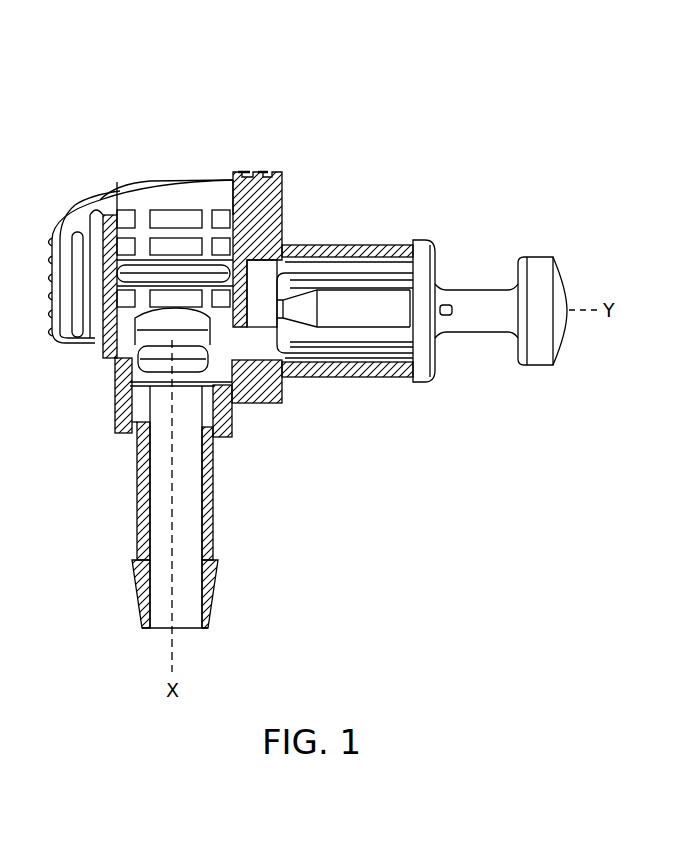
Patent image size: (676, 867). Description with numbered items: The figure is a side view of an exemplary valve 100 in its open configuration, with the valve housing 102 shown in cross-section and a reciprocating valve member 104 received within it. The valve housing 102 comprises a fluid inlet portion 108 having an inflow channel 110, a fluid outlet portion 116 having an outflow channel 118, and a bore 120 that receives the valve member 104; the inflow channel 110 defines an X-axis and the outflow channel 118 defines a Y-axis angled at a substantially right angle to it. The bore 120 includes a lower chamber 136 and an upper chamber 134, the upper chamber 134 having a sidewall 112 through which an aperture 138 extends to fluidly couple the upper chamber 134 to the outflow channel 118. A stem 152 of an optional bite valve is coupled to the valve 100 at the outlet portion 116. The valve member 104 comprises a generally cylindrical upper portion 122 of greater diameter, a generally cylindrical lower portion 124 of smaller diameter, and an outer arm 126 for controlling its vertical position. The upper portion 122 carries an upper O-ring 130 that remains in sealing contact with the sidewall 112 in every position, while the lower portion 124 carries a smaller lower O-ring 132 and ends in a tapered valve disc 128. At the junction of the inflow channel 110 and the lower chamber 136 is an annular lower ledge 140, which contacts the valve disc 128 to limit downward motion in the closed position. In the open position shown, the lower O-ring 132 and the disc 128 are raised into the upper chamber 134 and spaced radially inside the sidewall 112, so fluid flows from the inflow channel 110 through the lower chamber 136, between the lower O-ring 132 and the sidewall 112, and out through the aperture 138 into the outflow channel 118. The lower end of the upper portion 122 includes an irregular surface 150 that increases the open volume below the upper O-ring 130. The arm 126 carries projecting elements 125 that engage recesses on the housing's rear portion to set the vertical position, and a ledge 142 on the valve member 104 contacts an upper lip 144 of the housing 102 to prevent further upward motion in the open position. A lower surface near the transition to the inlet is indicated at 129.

The valve 100 is at (497, 105).
The valve housing 102 is at (262, 190).
The reciprocating valve member 104 is at (150, 164).
The fluid inlet portion 108 is at (207, 553).
The inflow channel 110 is at (195, 598).
The sidewall 112 is at (222, 188).
The fluid outlet portion 116 is at (395, 372).
The outflow channel 118 is at (267, 280).
The bore 120 is at (135, 365).
The upper portion 122 is at (192, 202).
The lower portion 124 is at (140, 345).
The projecting elements 125 is at (93, 302).
The outer arm 126 is at (88, 202).
The valve disc 128 is at (210, 422).
The outlet flange 129 is at (200, 400).
The upper O-ring 130 is at (152, 270).
The lower O-ring 132 is at (215, 385).
The upper chamber 134 is at (237, 380).
The lower chamber 136 is at (142, 425).
The aperture 138 is at (270, 337).
The annular lower ledge 140 is at (143, 445).
The ledge 142 is at (90, 290).
The upper lip 144 is at (90, 262).
The irregular surface 150 is at (130, 333).
The stem 152 is at (537, 258).